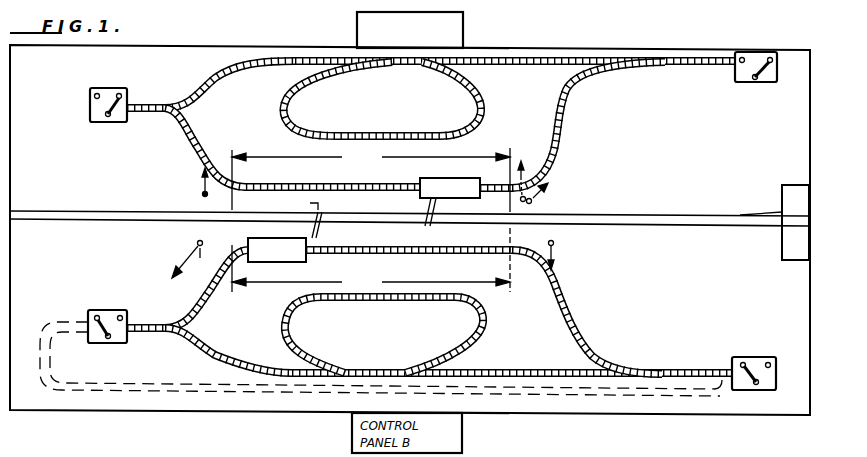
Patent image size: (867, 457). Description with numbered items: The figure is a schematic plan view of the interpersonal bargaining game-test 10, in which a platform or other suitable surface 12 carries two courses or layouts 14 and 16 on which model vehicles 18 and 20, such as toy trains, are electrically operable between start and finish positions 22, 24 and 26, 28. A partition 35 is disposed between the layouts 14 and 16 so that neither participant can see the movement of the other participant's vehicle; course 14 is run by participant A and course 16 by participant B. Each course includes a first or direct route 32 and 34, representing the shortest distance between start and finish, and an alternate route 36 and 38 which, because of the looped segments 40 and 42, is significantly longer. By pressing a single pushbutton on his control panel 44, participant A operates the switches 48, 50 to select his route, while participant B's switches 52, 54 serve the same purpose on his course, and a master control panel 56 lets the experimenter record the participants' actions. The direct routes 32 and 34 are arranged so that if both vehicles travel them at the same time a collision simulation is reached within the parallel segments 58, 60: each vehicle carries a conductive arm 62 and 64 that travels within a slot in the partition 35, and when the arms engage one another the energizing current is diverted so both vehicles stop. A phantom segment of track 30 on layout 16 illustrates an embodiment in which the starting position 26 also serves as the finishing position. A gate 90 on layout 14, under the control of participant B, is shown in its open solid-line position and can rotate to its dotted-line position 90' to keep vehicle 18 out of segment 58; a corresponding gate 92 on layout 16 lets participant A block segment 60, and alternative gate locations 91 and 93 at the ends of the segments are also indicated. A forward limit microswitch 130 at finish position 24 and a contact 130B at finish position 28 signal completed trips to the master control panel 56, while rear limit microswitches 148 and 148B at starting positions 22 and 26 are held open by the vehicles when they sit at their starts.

The interpersonal bargaining game-test 10 is at (603, 41).
The platform 12 is at (2, 410).
The course 14 is at (246, 119).
The course 16 is at (263, 319).
The model vehicle 18 is at (470, 176).
The model vehicle 20 is at (296, 262).
The start position 22 is at (735, 76).
The finish position 24 is at (108, 122).
The start position 26 is at (118, 309).
The finish position 28 is at (758, 355).
The phantom segment of track 30 is at (278, 400).
The direct route 32 is at (290, 186).
The direct route 34 is at (438, 248).
The partition 35 is at (117, 200).
The alternate route 36 is at (296, 66).
The alternate route 38 is at (270, 345).
The looped segment 40 is at (378, 116).
The looped segment 42 is at (370, 302).
The control panel 44 is at (463, 26).
The switch 48 is at (628, 68).
The switch 50 is at (150, 103).
The switch 52 is at (620, 366).
The switch 54 is at (158, 318).
The master control panel 56 is at (785, 185).
The segment 58 is at (371, 180).
The segment 60 is at (371, 260).
The conductive arm 62 is at (425, 207).
The conductive arm 64 is at (308, 204).
The gate 90 is at (550, 198).
The closed gate position 90' is at (524, 169).
The gate location 91 is at (200, 188).
The gate 92 is at (190, 250).
The gate location 93 is at (554, 246).
The forward limit microswitch 130 is at (103, 110).
The rear limit microswitch 148 is at (775, 82).
The rear limit microswitch 148B is at (92, 324).
The contact 130B is at (734, 380).